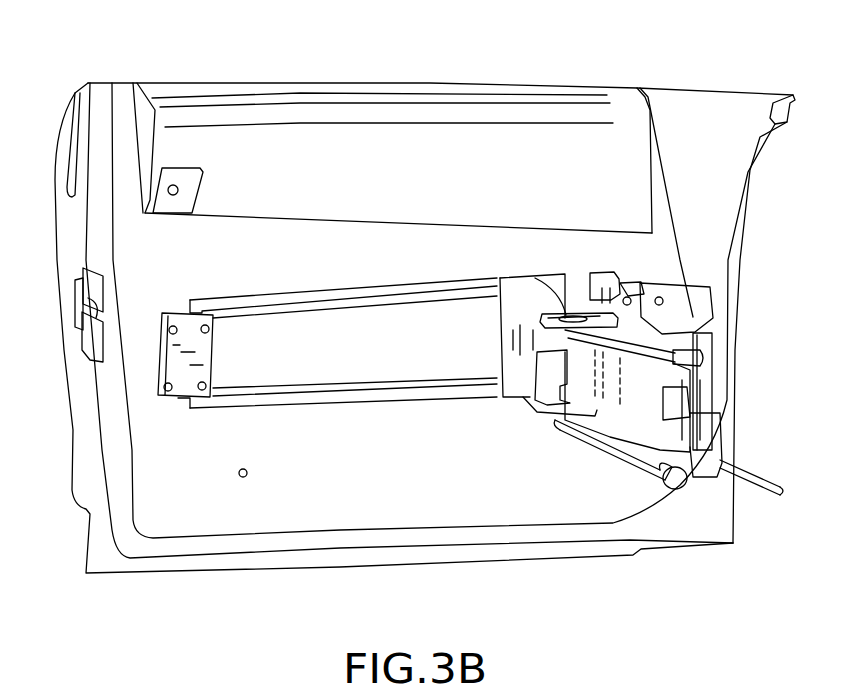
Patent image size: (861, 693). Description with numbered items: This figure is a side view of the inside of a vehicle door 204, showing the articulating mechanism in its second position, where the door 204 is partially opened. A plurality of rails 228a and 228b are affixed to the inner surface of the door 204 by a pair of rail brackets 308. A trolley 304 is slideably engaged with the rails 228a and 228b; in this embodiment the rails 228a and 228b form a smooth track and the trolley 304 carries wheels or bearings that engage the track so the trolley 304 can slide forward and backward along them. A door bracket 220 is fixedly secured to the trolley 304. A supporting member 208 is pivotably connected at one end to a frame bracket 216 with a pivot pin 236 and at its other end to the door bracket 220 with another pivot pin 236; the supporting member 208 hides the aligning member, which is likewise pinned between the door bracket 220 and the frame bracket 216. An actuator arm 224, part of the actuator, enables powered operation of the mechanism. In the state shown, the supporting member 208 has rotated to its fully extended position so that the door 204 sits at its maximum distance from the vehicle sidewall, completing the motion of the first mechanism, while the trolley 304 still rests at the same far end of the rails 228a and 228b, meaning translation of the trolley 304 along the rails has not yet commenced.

The door 204 is at (192, 100).
The supporting member 208 is at (653, 420).
The frame bracket 216 is at (697, 358).
The door bracket 220 is at (535, 278).
The actuator arm 224 is at (776, 490).
The rail 228a is at (350, 295).
The rail 228b is at (306, 402).
The pivot pin 236 is at (673, 320).
The trolley 304 is at (598, 273).
The rail bracket 308 is at (170, 362).